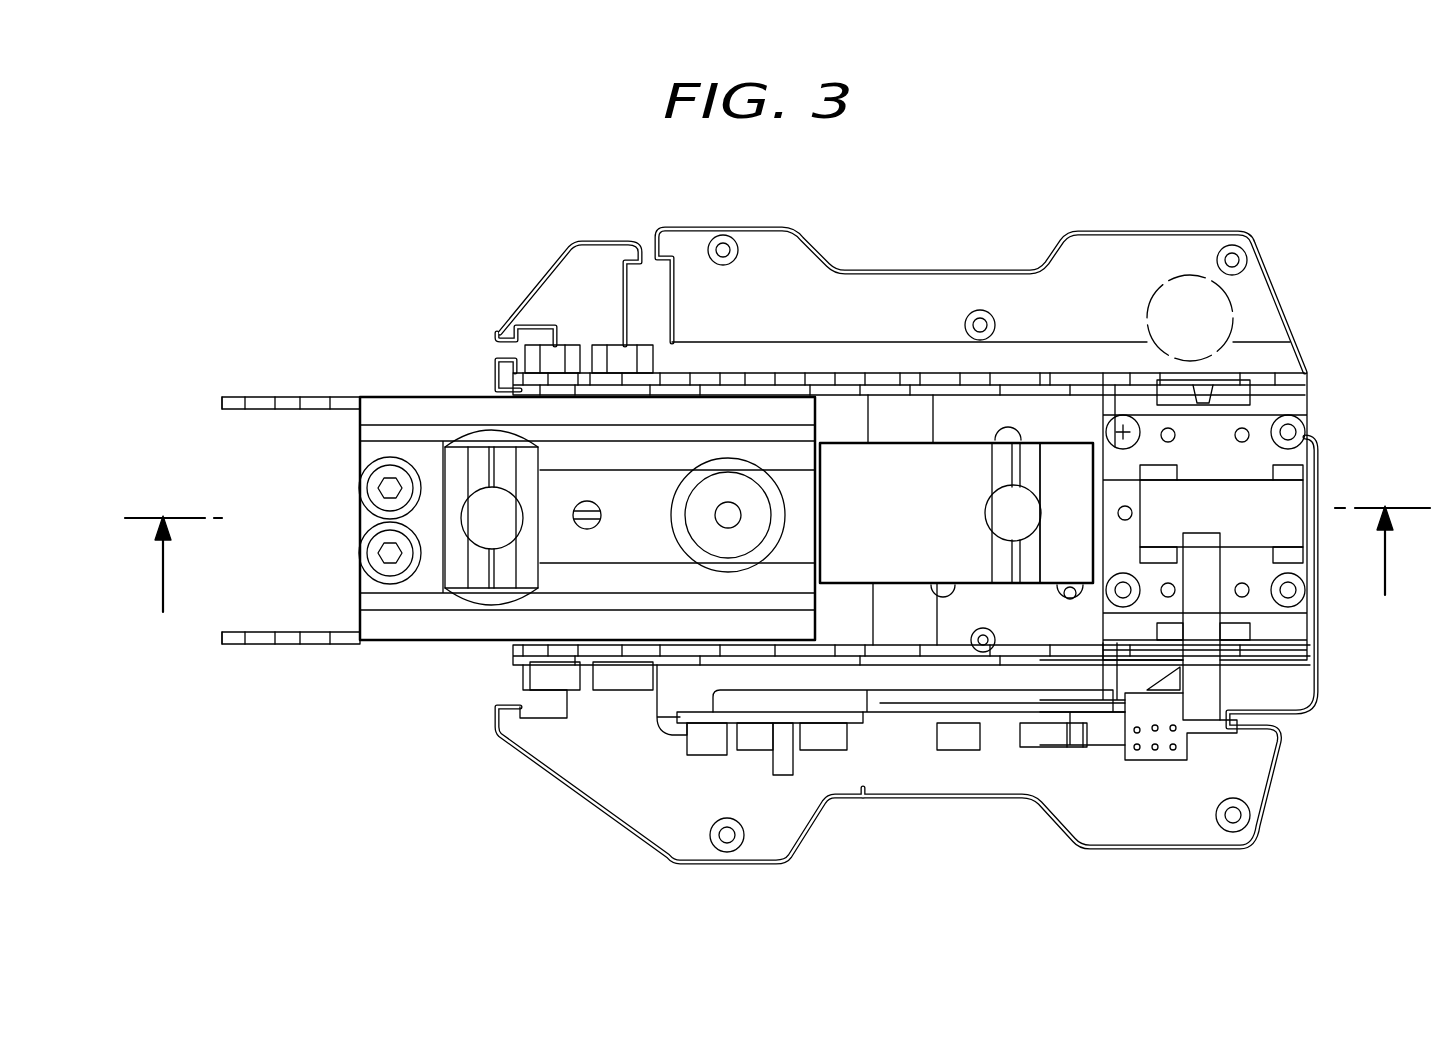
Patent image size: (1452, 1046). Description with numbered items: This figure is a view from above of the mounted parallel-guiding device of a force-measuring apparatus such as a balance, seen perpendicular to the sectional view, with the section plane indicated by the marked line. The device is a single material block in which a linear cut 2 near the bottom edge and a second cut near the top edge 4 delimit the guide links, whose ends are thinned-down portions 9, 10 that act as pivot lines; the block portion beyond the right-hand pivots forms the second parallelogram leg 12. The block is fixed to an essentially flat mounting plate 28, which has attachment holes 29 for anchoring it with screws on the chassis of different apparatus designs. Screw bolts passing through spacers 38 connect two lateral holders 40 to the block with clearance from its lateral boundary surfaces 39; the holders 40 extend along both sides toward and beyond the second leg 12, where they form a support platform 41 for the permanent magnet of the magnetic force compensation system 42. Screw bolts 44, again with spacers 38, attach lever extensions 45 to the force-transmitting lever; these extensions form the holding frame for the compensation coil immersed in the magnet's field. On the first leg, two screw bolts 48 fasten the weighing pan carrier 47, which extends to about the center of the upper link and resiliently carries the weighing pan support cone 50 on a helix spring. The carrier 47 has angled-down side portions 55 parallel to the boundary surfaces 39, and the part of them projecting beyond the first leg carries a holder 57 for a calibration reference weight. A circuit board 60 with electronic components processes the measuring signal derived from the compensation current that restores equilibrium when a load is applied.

The linear cut 2 is at (777, 560).
The top edge 4 is at (870, 480).
The thinned-down portion 9 is at (1030, 465).
The thinned-down portion 10 is at (478, 465).
The second parallelogram leg 12 is at (1073, 458).
The mounting plate 28 is at (1127, 257).
The attachment holes 29 is at (1245, 258).
The spacers 38 is at (913, 400).
The lateral boundary surfaces 39 is at (975, 440).
The lateral holders 40 is at (785, 357).
The support platform 41 is at (1300, 597).
The magnetic force compensation system 42 is at (1340, 465).
The screw bolts 44 is at (618, 357).
The lever extensions 45 is at (883, 385).
The weighing pan carrier 47 is at (427, 608).
The screw bolts 48 is at (372, 553).
The weighing pan support cone 50 is at (700, 510).
The angled-down side portions 55 is at (330, 395).
The holder 57 is at (262, 400).
The circuit board 60 is at (820, 755).